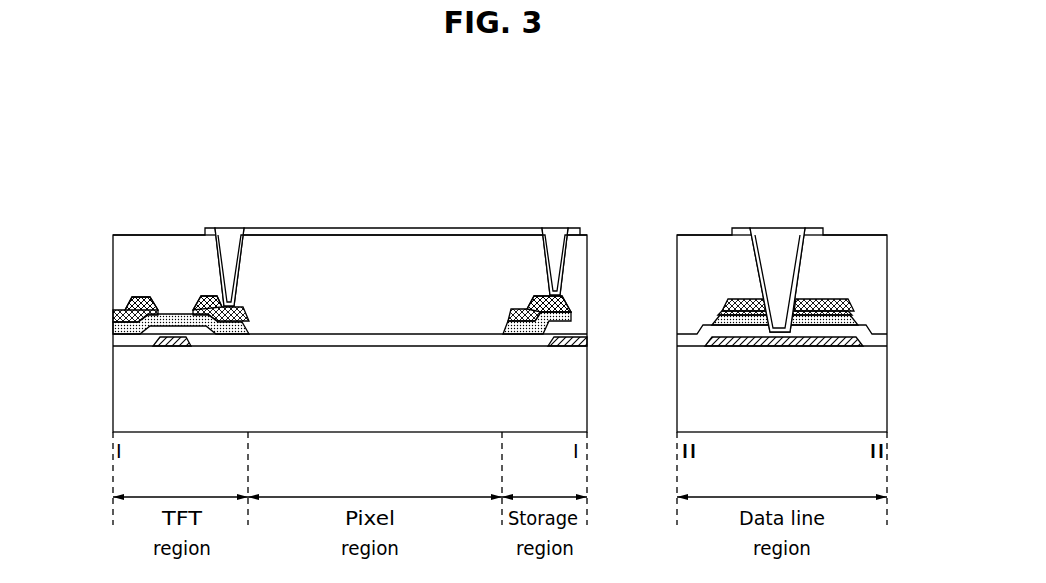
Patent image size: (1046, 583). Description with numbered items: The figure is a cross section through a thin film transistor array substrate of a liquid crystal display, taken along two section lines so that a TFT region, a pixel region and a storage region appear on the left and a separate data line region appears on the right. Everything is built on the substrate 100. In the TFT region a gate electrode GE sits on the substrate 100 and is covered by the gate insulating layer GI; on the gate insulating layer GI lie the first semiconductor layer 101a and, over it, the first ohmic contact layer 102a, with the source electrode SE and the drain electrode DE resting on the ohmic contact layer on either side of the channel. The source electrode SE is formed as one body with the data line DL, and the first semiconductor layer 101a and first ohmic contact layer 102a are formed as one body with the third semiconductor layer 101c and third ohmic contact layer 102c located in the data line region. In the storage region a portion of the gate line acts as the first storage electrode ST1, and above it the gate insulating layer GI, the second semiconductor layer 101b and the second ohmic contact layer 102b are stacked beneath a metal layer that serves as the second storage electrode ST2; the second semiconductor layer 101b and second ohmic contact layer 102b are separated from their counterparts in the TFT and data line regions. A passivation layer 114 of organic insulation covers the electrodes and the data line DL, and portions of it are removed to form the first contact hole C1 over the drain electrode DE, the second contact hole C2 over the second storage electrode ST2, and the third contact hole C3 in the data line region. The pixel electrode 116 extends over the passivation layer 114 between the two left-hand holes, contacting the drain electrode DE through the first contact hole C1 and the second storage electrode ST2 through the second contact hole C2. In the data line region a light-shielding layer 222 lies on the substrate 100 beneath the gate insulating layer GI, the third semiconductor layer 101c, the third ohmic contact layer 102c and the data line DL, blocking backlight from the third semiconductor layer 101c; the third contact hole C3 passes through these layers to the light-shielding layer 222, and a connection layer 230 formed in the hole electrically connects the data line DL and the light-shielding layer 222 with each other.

The substrate 100 is at (113, 397).
The gate insulating layer GI is at (113, 345).
The gate electrode GE is at (172, 347).
The first semiconductor layer 101a is at (113, 328).
The first ohmic contact layer 102a is at (113, 317).
The source electrode SE is at (138, 297).
The drain electrode DE is at (206, 296).
The first storage electrode ST1 is at (560, 347).
The second semiconductor layer 101b is at (503, 329).
The second ohmic contact layer 102b is at (506, 316).
The second storage electrode ST2 is at (523, 297).
The light-shielding layer 222 is at (706, 342).
The third semiconductor layer 101c is at (715, 322).
The third ohmic contact layer 102c is at (717, 312).
The data line DL is at (720, 305).
The passivation layer 114 is at (173, 235).
The first contact hole C1 is at (229, 235).
The second contact hole C2 is at (555, 232).
The pixel electrode 116 is at (460, 230).
The connection layer 230 is at (740, 228).
The third contact hole C3 is at (779, 238).